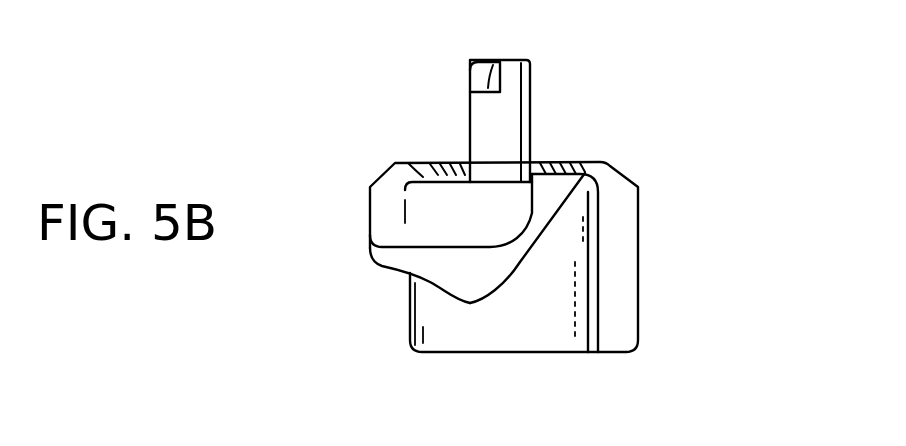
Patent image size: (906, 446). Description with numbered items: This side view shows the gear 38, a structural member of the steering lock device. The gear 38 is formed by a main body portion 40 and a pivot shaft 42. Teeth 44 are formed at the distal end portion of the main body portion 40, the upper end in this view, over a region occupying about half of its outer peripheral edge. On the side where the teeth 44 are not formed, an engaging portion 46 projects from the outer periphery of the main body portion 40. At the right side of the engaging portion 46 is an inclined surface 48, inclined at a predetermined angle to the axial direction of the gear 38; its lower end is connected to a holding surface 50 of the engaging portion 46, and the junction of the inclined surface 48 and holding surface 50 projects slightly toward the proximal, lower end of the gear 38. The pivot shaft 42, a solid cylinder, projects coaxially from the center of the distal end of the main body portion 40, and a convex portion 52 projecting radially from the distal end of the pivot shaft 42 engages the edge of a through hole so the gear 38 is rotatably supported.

The gear 38 is at (675, 58).
The main body portion 40 is at (623, 277).
The pivot shaft 42 is at (483, 120).
The teeth 44 is at (571, 163).
The engaging portion 46 is at (473, 275).
The inclined surface 48 is at (533, 255).
The holding surface 50 is at (392, 270).
The convex portion 52 is at (483, 62).